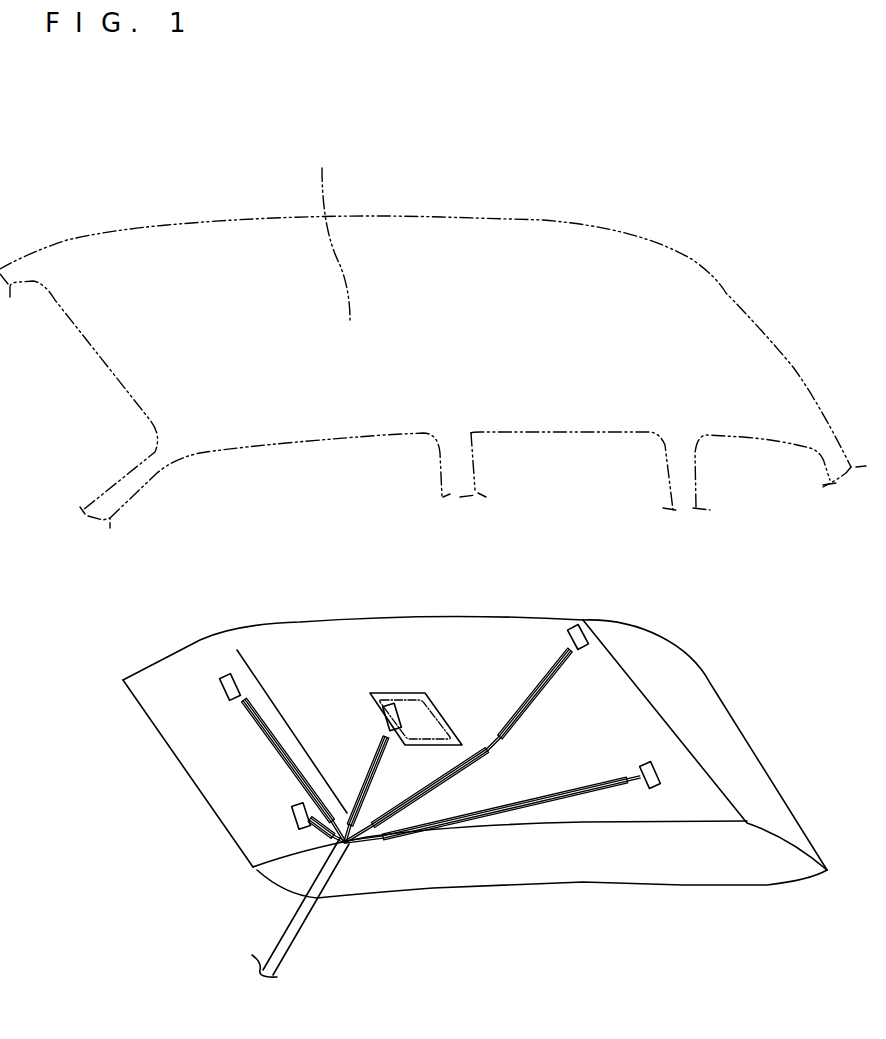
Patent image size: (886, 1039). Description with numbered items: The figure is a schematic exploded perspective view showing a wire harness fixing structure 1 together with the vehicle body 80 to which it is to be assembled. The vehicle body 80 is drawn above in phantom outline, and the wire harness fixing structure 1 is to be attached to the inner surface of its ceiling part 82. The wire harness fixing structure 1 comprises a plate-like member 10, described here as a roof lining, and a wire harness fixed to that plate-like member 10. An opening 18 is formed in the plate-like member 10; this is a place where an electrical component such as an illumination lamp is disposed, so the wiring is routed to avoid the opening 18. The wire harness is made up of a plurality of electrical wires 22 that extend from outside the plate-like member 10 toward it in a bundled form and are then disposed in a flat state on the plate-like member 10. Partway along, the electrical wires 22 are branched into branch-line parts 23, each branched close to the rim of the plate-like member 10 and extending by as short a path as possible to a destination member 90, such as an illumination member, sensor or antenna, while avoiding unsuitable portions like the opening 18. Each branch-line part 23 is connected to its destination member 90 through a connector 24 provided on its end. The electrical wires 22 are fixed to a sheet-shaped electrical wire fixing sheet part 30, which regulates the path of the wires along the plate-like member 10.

The wire harness fixing structure 1 is at (122, 638).
The plate-like member 10 is at (410, 630).
The opening 18 is at (437, 717).
The electrical wires 22 is at (300, 923).
The branch-line part 23 is at (277, 760).
The connector 24 is at (220, 687).
The electrical wire fixing sheet part 30 is at (270, 720).
The vehicle body 80 is at (666, 197).
The ceiling part 82 is at (330, 228).
The destination member 90 is at (388, 698).